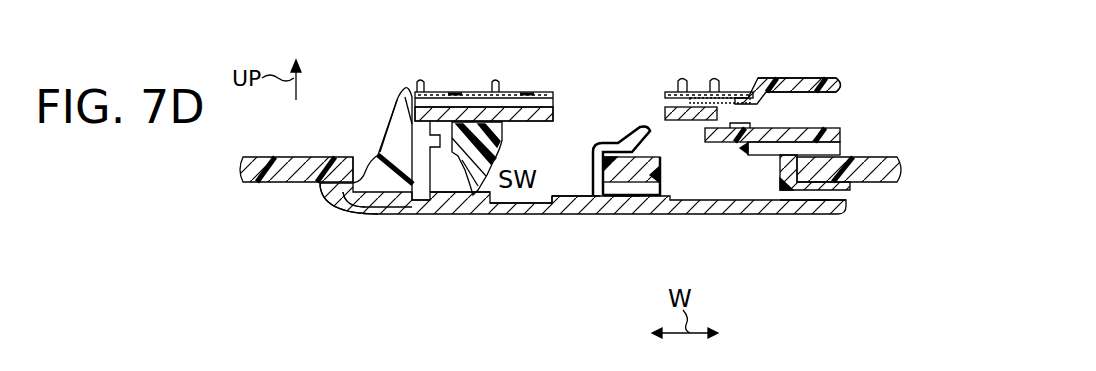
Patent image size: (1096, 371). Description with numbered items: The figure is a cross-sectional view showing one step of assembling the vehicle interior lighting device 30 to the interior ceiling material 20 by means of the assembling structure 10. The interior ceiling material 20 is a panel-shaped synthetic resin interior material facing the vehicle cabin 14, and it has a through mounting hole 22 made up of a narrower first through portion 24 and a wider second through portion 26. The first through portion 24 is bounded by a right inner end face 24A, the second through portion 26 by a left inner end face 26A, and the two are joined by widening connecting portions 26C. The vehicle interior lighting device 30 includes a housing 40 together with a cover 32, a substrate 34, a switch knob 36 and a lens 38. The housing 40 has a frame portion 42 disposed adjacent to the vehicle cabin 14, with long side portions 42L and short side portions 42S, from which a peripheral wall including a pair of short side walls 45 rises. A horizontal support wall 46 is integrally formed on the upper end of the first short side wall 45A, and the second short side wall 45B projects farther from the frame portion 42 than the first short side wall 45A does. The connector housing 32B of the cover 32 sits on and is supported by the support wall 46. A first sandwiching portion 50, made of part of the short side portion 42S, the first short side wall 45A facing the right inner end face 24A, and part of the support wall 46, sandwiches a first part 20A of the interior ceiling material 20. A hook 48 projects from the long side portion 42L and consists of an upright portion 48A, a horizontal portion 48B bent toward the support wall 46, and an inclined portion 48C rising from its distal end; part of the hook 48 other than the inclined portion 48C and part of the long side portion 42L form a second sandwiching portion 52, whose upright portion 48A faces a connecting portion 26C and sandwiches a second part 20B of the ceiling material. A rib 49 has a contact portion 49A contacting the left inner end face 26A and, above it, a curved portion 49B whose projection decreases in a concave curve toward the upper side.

The assembling structure 10 is at (884, 272).
The vehicle cabin 14 is at (798, 339).
The interior ceiling material 20 is at (272, 192).
The first part 20A is at (838, 213).
The second part 20B is at (646, 208).
The mounting hole 22 is at (372, 152).
The first through portion 24 is at (676, 173).
The right inner end face 24A is at (788, 173).
The second through portion 26 is at (358, 196).
The left inner end face 26A is at (366, 200).
The connecting portions 26C is at (560, 206).
The vehicle interior lighting device 30 is at (322, 270).
The cover 32 is at (699, 82).
The connector housing 32B is at (782, 77).
The substrate 34 is at (488, 108).
The switch knob 36 is at (460, 216).
The lens 38 is at (497, 216).
The housing 40 is at (801, 104).
The frame portion 42 is at (790, 200).
The long side portions 42L is at (591, 208).
The short side portions 42S is at (822, 203).
The short side walls 45 is at (661, 150).
The first short side wall 45A is at (812, 186).
The second short side wall 45B is at (445, 122).
The support wall 46 is at (835, 138).
The hook 48 is at (584, 146).
The upright portion 48A is at (598, 141).
The horizontal portion 48B is at (626, 143).
The inclined portion 48C is at (652, 124).
The rib 49 is at (396, 92).
The contact portion 49A is at (350, 159).
The curved portion 49B is at (381, 108).
The first sandwiching portion 50 is at (806, 140).
The second sandwiching portion 52 is at (623, 207).